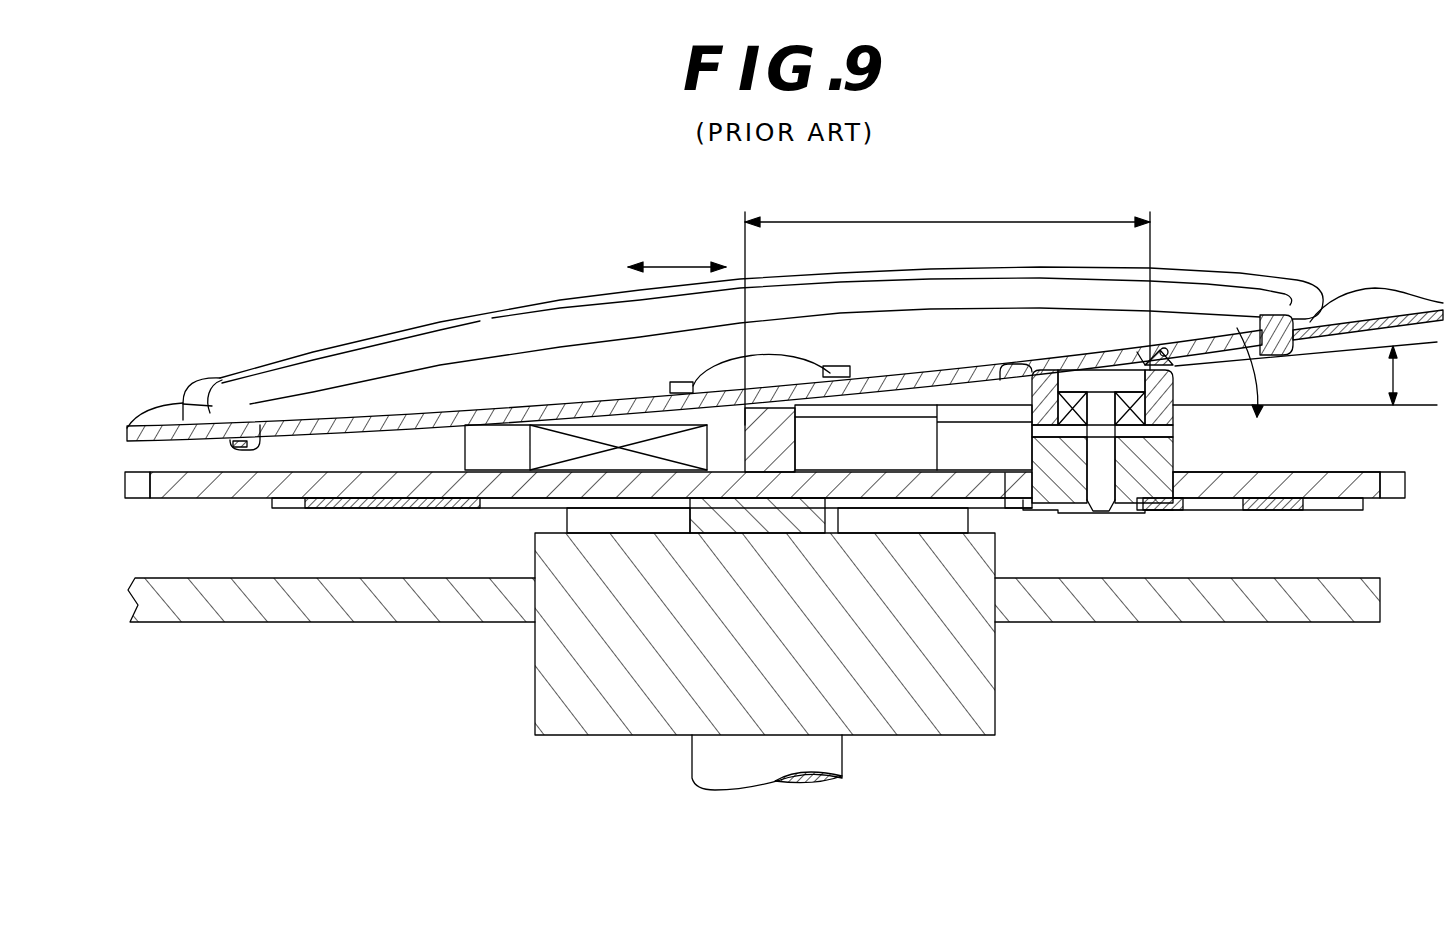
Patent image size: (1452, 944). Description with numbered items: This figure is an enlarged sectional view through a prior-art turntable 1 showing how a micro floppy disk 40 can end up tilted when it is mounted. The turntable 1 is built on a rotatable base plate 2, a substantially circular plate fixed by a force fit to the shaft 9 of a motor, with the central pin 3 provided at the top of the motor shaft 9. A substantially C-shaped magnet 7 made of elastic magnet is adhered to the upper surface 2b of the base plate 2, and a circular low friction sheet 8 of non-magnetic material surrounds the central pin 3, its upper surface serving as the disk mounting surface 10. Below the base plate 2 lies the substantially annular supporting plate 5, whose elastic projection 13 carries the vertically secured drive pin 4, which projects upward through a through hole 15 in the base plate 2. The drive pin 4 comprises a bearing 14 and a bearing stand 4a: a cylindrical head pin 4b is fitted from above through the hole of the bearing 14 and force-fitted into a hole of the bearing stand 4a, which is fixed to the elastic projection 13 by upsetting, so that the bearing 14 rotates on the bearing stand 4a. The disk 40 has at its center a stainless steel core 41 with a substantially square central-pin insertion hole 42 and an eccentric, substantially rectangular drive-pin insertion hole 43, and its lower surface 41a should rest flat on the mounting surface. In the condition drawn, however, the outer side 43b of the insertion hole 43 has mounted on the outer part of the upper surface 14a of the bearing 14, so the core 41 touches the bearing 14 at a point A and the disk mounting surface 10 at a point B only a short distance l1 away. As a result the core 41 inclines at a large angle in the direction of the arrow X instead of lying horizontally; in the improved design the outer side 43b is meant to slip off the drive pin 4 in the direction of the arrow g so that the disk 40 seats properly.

The turntable 1 is at (1385, 512).
The rotatable base plate 2 is at (1393, 480).
The upper surface of the base plate 2b is at (1318, 472).
The central pin 3 is at (717, 372).
The drive pin 4 is at (1088, 358).
The bearing stand 4a is at (1118, 505).
The cylindrical head pin 4b is at (1097, 380).
The supporting plate 5 is at (285, 508).
The magnet 7 is at (540, 447).
The low friction sheet 8 is at (918, 405).
The motor shaft 9 is at (832, 762).
The disk mounting surface 10 is at (790, 397).
The elastic projection 13 is at (1165, 500).
The bearing 14 is at (1173, 385).
The upper surface of the bearing 14a is at (1063, 352).
The through hole 15 is at (1008, 496).
The micro floppy disk 40 is at (160, 410).
The core 41 is at (203, 385).
The lower surface of the core 41a is at (230, 450).
The central-pin insertion hole 42 is at (835, 366).
The drive-pin insertion hole 43 is at (1013, 366).
The outer side of the insertion hole 43b is at (1138, 352).
The point A is at (1165, 352).
The point B is at (732, 368).
The direction of arrow g is at (1260, 378).
The direction of arrow X is at (674, 266).
The distance l1 is at (918, 221).